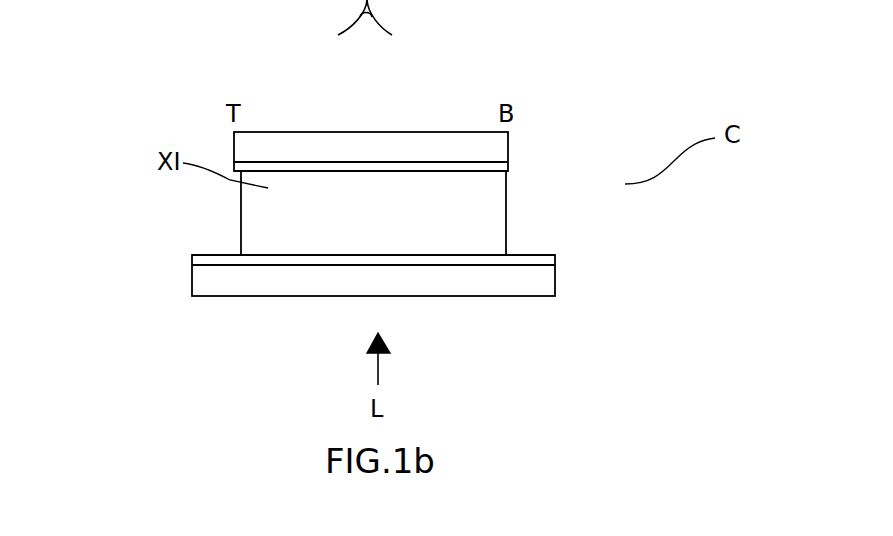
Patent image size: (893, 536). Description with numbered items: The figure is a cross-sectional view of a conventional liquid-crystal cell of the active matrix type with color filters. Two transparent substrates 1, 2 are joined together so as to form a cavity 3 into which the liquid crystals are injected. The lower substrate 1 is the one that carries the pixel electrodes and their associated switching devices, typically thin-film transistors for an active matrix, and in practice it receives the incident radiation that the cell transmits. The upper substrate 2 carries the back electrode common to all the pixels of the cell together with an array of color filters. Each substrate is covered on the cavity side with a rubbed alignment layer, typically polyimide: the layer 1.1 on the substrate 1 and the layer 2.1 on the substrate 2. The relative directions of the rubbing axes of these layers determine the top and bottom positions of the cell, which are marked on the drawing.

The transparent substrate 1 is at (200, 285).
The rubbed alignment layer 1.1 is at (190, 263).
The transparent substrate 2 is at (497, 145).
The rubbed alignment layer 2.1 is at (492, 167).
The cavity 3 is at (220, 214).